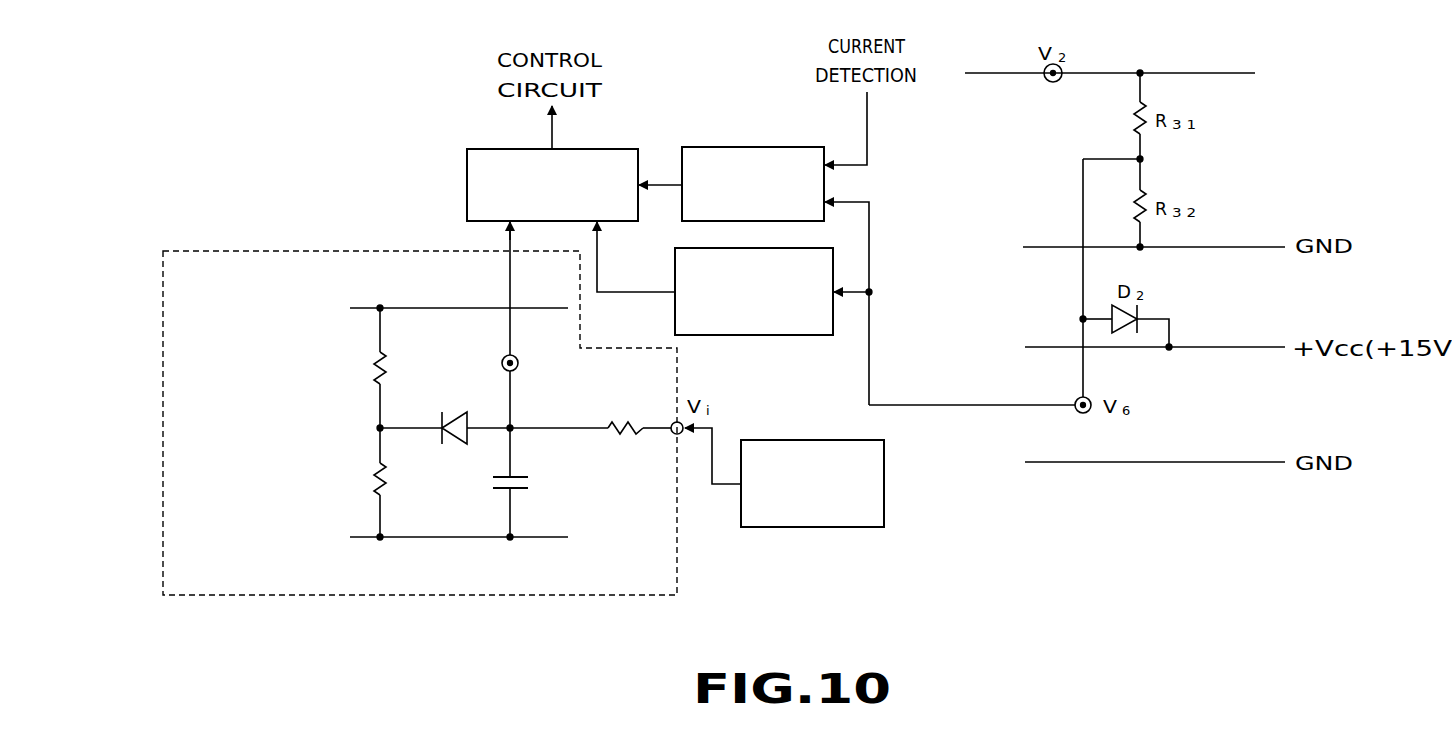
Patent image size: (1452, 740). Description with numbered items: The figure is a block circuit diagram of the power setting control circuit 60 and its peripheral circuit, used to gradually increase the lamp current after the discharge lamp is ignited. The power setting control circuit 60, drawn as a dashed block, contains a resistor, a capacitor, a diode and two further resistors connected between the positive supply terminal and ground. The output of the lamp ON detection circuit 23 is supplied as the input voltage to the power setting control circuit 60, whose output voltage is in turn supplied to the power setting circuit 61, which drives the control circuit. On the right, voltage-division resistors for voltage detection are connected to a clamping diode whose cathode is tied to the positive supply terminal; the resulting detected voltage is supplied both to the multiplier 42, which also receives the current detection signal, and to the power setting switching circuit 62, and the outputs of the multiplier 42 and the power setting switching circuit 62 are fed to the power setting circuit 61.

The power setting circuit 61 is at (467, 179).
The multiplier 42 is at (751, 147).
The power setting switching circuit 62 is at (753, 337).
The lamp ON detection circuit 23 is at (811, 439).
The power setting control circuit 60 is at (423, 597).